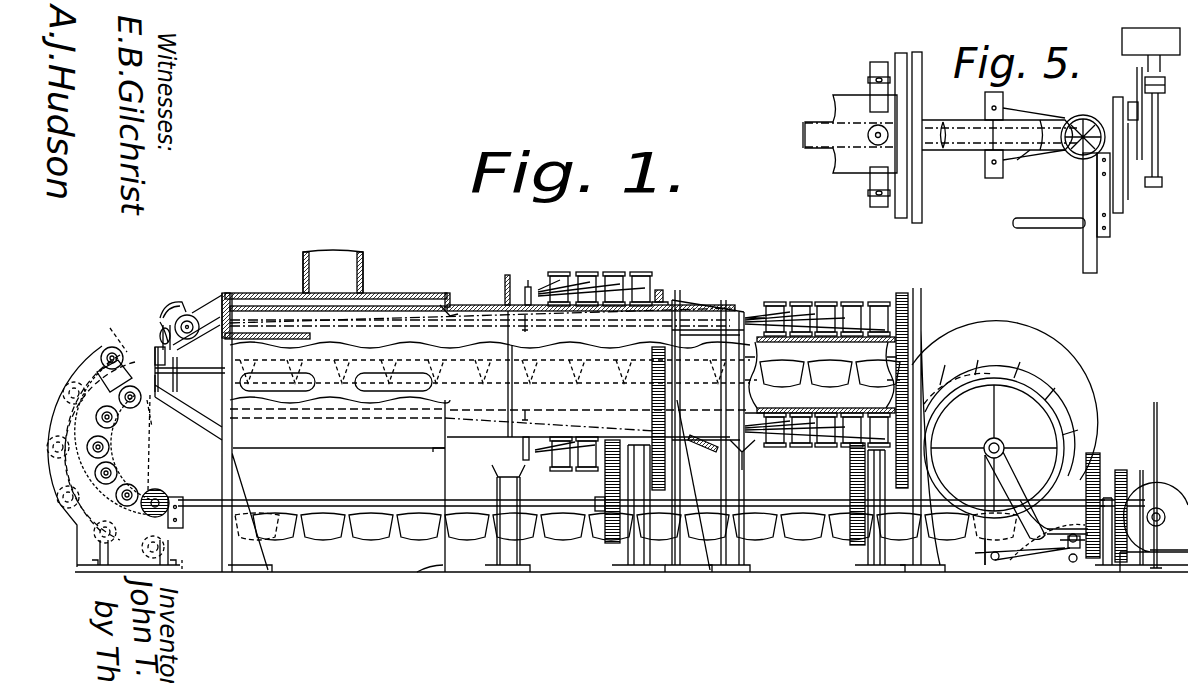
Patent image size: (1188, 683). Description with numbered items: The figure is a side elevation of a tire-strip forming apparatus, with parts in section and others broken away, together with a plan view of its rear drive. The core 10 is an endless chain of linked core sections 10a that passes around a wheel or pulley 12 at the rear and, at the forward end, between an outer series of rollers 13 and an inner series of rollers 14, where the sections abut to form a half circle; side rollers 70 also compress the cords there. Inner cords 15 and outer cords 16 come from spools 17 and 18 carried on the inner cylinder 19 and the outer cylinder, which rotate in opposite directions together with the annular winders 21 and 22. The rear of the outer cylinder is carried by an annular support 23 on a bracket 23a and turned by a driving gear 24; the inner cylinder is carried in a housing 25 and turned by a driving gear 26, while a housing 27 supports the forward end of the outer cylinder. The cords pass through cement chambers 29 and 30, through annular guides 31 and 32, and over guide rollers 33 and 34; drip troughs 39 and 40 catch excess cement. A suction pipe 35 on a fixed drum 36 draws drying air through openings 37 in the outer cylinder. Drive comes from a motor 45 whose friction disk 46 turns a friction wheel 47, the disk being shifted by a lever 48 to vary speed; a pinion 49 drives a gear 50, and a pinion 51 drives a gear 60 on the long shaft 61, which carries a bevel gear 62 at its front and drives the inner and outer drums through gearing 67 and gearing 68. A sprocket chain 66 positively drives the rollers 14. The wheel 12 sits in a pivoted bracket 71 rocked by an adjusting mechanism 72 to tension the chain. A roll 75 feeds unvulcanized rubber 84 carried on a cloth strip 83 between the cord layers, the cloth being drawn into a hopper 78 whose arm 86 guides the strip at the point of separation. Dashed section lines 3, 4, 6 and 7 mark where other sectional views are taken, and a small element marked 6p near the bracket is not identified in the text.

In FIG. 1, the section line 3— 3 is at (727, 298).
In FIG. 1, the section line 4— 4 is at (417, 292).
In FIG. 1, the section line 6— 6 is at (130, 370).
In FIG. 1, the link 6' 6p is at (1030, 495).
In FIG. 1, the section line 7— 7 is at (180, 538).
In FIG. 1, the core 10 is at (960, 360).
In FIG. 5, the core 10 is at (935, 125).
In FIG. 1, the core sections 10a is at (978, 360).
In FIG. 1, the wheel or pulley 12 is at (994, 448).
In FIG. 5, the wheel or pulley 12 is at (1022, 168).
In FIG. 1, the outer series of rollers 13 is at (113, 456).
In FIG. 1, the inner series of rollers 14 is at (114, 446).
In FIG. 1, the cords of inner layer 15 is at (758, 312).
In FIG. 1, the cords of outer layer 16 is at (545, 290).
In FIG. 1, the spools 17 is at (858, 302).
In FIG. 5, the spools 17 is at (864, 180).
In FIG. 1, the spools 18 is at (615, 272).
In FIG. 1, the inner rotary cylinder 19 is at (195, 320).
In FIG. 5, the inner rotary cylinder 19 is at (838, 105).
In FIG. 1, the rotary annular winder 21 is at (180, 395).
In FIG. 1, the rotary annular winder 22 is at (165, 355).
In FIG. 1, the annular support 23 is at (680, 290).
In FIG. 1, the bracket 23a is at (698, 485).
In FIG. 1, the driving gear 24 is at (660, 290).
In FIG. 1, the annular supporting member or housing 25 is at (922, 296).
In FIG. 1, the driving gear 26 is at (902, 292).
In FIG. 5, the driving gear 26 is at (900, 55).
In FIG. 1, the annular supporting member or housing 27 is at (222, 297).
In FIG. 1, the rubber cement chamber 29 is at (741, 310).
In FIG. 1, the rubber cement chamber 30 is at (530, 282).
In FIG. 1, the annular guide 31 is at (725, 322).
In FIG. 1, the annular guide 32 is at (506, 278).
In FIG. 1, the guide roller 33 is at (482, 364).
In FIG. 1, the guide roller 34 is at (448, 300).
In FIG. 1, the suction pipe 35 is at (318, 262).
In FIG. 1, the drum 36 is at (270, 298).
In FIG. 1, the openings 37 is at (342, 388).
In FIG. 1, the drip trough 39 is at (712, 450).
In FIG. 1, the drip trough 40 is at (495, 473).
In FIG. 1, the driving motor 45 is at (1166, 488).
In FIG. 5, the driving motor 45 is at (1151, 107).
In FIG. 1, the friction disk 46 is at (1165, 517).
In FIG. 5, the friction disk 46 is at (1163, 80).
In FIG. 1, the friction wheel 47 is at (1142, 472).
In FIG. 5, the friction wheel 47 is at (1145, 135).
In FIG. 1, the lever 48 is at (1152, 412).
In FIG. 5, the pinion 49 is at (1118, 97).
In FIG. 1, the gear 50 is at (1122, 565).
In FIG. 5, the gear 50 is at (1125, 192).
In FIG. 5, the pinion 51 is at (1090, 163).
In FIG. 1, the gear 60 is at (1096, 456).
In FIG. 5, the gear 60 is at (1083, 256).
In FIG. 1, the shaft 61 is at (793, 500).
In FIG. 5, the shaft 61 is at (1060, 218).
In FIG. 1, the bevel gear 62 is at (160, 495).
In FIG. 1, the sprocket chain 66 is at (160, 466).
In FIG. 1, the gearing 67 is at (848, 480).
In FIG. 1, the gearing 68 is at (603, 490).
In FIG. 1, the side rollers 70 is at (122, 356).
In FIG. 1, the pivotally supported bracket 71 is at (985, 470).
In FIG. 1, the adjusting mechanism 72 is at (1076, 528).
In FIG. 5, the adjusting mechanism 72 is at (1086, 112).
In FIG. 1, the roll 75 is at (190, 315).
In FIG. 1, the receptacle or hopper 78 is at (170, 303).
In FIG. 1, the strip of cloth 83 is at (158, 333).
In FIG. 1, the unvulcanized rubber 84 is at (190, 369).
In FIG. 1, the downwardly extending arm 86 is at (163, 325).